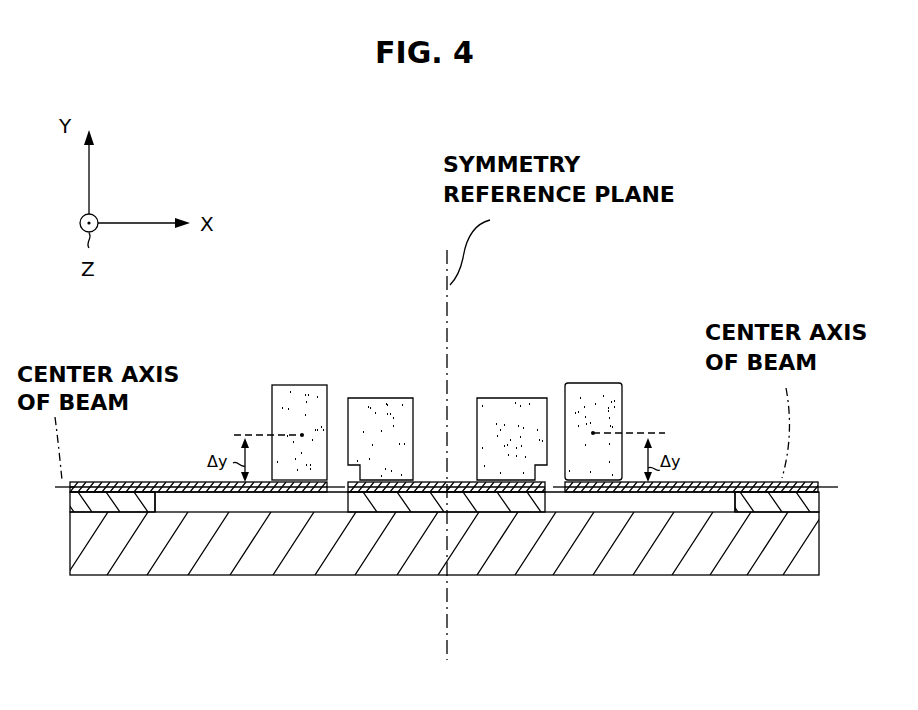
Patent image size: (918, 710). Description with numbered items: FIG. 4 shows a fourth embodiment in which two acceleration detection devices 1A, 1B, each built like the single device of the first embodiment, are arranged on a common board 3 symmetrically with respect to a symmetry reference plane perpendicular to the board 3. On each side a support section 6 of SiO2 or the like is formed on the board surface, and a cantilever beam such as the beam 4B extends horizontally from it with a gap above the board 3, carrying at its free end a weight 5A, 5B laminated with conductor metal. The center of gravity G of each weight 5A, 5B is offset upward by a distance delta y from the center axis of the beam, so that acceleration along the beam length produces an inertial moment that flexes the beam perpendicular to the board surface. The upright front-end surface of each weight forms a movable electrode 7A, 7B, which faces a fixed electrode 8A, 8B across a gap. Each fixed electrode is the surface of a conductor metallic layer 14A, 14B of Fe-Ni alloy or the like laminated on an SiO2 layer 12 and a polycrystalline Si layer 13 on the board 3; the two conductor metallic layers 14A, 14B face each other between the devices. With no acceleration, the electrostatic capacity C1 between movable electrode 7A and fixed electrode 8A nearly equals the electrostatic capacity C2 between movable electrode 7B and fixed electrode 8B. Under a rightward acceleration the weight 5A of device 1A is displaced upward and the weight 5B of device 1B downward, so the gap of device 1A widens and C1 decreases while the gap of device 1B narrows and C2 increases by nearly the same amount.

The acceleration detection device 1A is at (250, 351).
The acceleration detection device 1B is at (678, 338).
The board 3 is at (378, 558).
The beam 4B is at (178, 481).
The weight 5A is at (291, 395).
The weight 5B is at (592, 392).
The support section 6 is at (73, 500).
The movable electrode 7A is at (337, 415).
The movable electrode 7B is at (556, 403).
The fixed electrode 8A is at (346, 398).
The fixed electrode 8B is at (547, 403).
The SiO2 layer 12 is at (517, 500).
The polycrystalline Si layer 13 is at (543, 487).
The conductor metallic layer 14A is at (373, 403).
The conductor metallic layer 14B is at (493, 403).
The electrostatic capacity C1 is at (343, 404).
The electrostatic capacity C2 is at (555, 414).
The center of gravity G is at (298, 432).